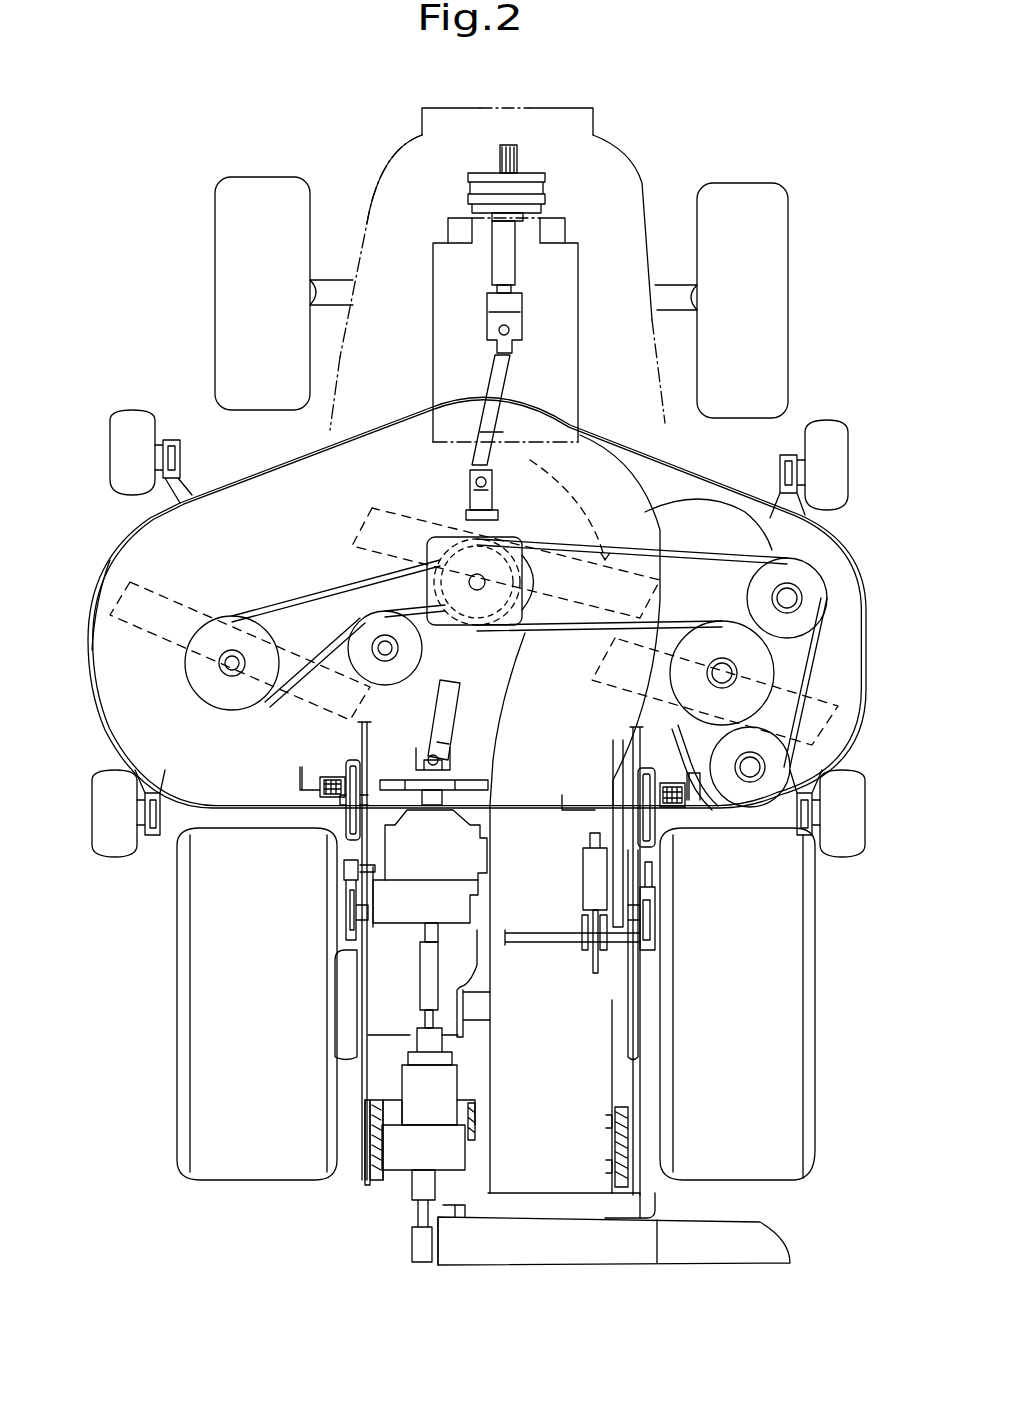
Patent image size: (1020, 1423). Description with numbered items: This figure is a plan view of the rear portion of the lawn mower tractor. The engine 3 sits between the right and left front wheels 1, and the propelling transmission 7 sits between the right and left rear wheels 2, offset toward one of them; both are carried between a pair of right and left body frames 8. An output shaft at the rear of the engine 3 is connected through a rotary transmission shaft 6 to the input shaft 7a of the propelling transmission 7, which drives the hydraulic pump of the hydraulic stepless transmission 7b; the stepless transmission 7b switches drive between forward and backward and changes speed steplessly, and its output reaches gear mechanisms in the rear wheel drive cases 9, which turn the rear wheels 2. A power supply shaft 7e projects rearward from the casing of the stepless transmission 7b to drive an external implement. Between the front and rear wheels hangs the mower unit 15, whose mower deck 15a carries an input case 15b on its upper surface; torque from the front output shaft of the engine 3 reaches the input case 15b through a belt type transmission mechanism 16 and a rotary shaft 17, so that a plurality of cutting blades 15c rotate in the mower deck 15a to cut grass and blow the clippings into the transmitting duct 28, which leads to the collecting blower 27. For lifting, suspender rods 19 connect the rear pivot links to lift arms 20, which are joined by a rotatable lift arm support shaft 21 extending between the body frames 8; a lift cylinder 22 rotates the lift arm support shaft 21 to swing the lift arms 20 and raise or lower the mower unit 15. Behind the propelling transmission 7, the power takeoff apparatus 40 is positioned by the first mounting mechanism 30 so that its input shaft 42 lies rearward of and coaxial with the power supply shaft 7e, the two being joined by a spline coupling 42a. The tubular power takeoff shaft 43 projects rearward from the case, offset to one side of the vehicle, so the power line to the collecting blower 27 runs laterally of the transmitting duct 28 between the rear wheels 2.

The front wheels 1 is at (232, 260).
The rear wheels 2 is at (190, 1045).
The engine 3 is at (578, 262).
The rotary transmission shaft 6 is at (445, 708).
The propelling transmission 7 is at (464, 859).
The input shaft 7a is at (440, 797).
The hydraulic stepless transmission 7b is at (465, 855).
The power supply shaft 7e is at (432, 935).
The body frames 8 is at (345, 1082).
The rear wheel drive cases 9 is at (345, 1008).
The mower unit 15 is at (265, 462).
The mower deck 15a is at (145, 555).
The input case 15b is at (444, 535).
The cutting blades 15c is at (360, 513).
The belt type transmission mechanism 16 is at (562, 194).
The rotary shaft 17 is at (470, 455).
The suspender rods 19 is at (370, 748).
The lift arms 20 is at (353, 918).
The lift arm support shaft 21 is at (565, 955).
The lift cylinder 22 is at (593, 860).
The collecting blower 27 is at (643, 1238).
The transmitting duct 28 is at (598, 1148).
The first mounting mechanism 30 is at (381, 1172).
The power takeoff apparatus 40 is at (472, 1087).
The input shaft 42 is at (432, 1022).
The coupling 42a is at (433, 970).
The power takeoff shaft 43 is at (418, 1185).